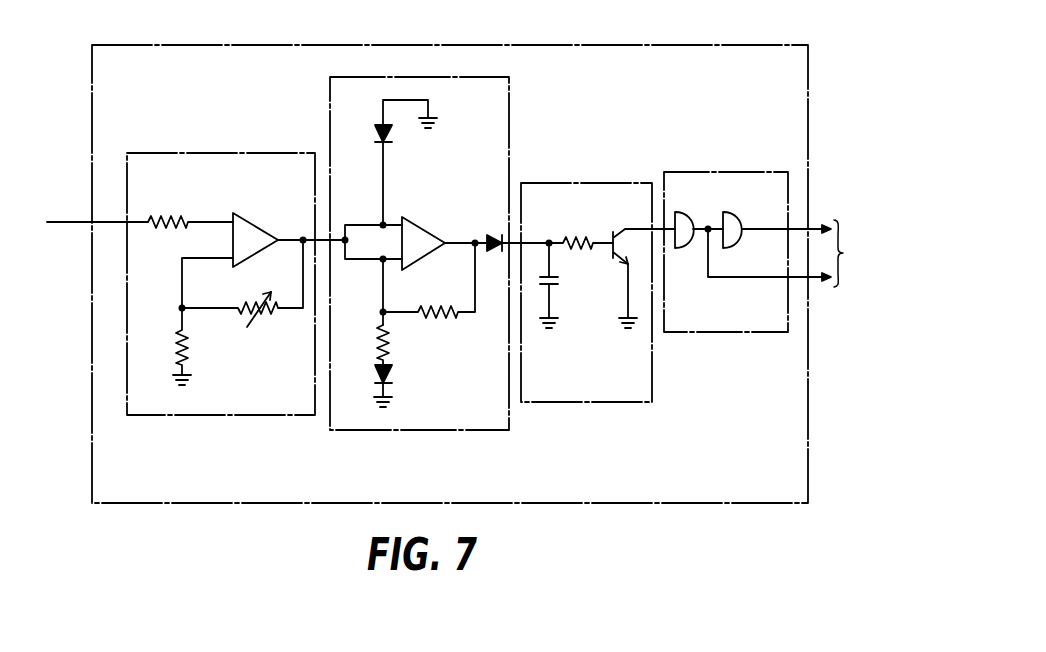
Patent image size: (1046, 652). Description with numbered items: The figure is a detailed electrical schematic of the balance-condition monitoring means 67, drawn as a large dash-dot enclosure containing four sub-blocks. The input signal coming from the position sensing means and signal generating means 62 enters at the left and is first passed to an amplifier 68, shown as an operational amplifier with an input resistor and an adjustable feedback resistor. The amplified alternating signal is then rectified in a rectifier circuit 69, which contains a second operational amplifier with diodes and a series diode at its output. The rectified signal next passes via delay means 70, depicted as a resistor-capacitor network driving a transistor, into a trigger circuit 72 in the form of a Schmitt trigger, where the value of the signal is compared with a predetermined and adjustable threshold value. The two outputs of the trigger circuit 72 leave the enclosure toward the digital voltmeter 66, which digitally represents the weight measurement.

The signal generating means 62 is at (79, 220).
The digital voltmeter 66 is at (862, 225).
The balance-condition monitoring means 67 is at (751, 58).
The amplifier 68 is at (252, 410).
The rectifier circuit 69 is at (468, 405).
The delay means 70 is at (630, 396).
The trigger circuit 72 is at (765, 322).